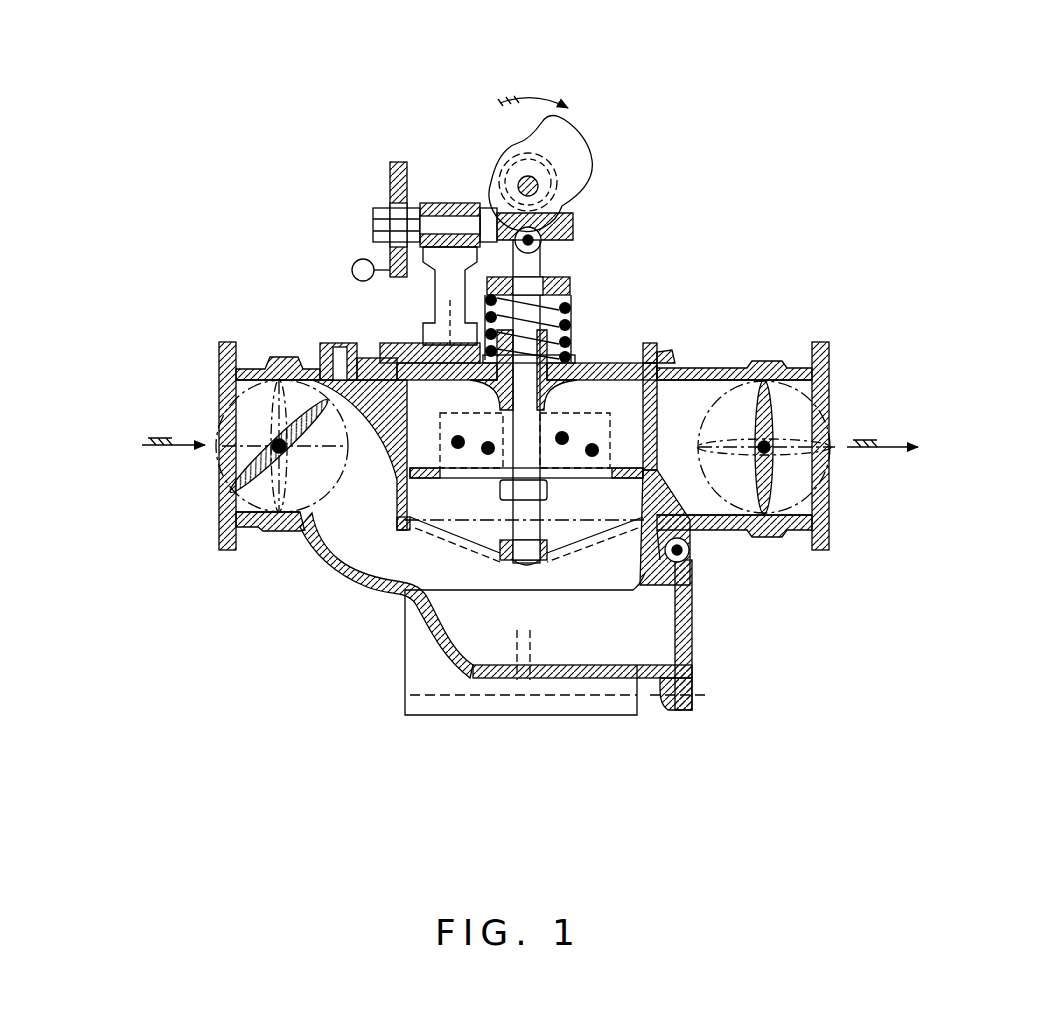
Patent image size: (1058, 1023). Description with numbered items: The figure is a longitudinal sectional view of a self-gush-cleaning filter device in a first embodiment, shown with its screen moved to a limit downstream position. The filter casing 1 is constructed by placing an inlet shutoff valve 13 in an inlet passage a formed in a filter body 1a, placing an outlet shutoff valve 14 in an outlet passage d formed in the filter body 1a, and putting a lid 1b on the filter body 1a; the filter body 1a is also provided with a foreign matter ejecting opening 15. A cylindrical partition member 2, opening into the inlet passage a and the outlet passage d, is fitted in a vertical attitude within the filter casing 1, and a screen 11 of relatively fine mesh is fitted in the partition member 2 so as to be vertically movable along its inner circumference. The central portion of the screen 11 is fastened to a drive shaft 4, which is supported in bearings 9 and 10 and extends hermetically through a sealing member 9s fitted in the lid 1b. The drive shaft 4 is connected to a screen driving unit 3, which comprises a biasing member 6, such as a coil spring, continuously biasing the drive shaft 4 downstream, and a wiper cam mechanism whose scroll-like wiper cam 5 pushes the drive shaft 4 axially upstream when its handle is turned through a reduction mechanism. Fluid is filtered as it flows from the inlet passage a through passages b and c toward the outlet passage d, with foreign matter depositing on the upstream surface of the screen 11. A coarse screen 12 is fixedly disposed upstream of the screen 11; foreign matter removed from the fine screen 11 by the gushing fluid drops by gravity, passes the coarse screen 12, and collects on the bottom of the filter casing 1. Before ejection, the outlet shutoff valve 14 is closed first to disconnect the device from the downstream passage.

The filter casing 1 is at (330, 608).
The filter body 1a is at (372, 598).
The lid 1b is at (400, 342).
The partition member 2 is at (318, 347).
The screen driving unit 3 is at (602, 197).
The drive shaft 4 is at (565, 262).
The wiper cam 5 is at (573, 167).
The biasing member 6 is at (572, 290).
The bearing 9 is at (575, 325).
The sealing member 9s is at (582, 352).
The bearing 10 is at (498, 547).
The screen 11 is at (612, 450).
The coarse screen 12 is at (583, 548).
The inlet shutoff valve 13 is at (217, 490).
The outlet shutoff valve 14 is at (795, 487).
The foreign matter ejecting opening 15 is at (690, 637).
The inlet passage a is at (255, 430).
The passage b is at (363, 527).
The passage c is at (693, 493).
The outlet passage d is at (800, 480).